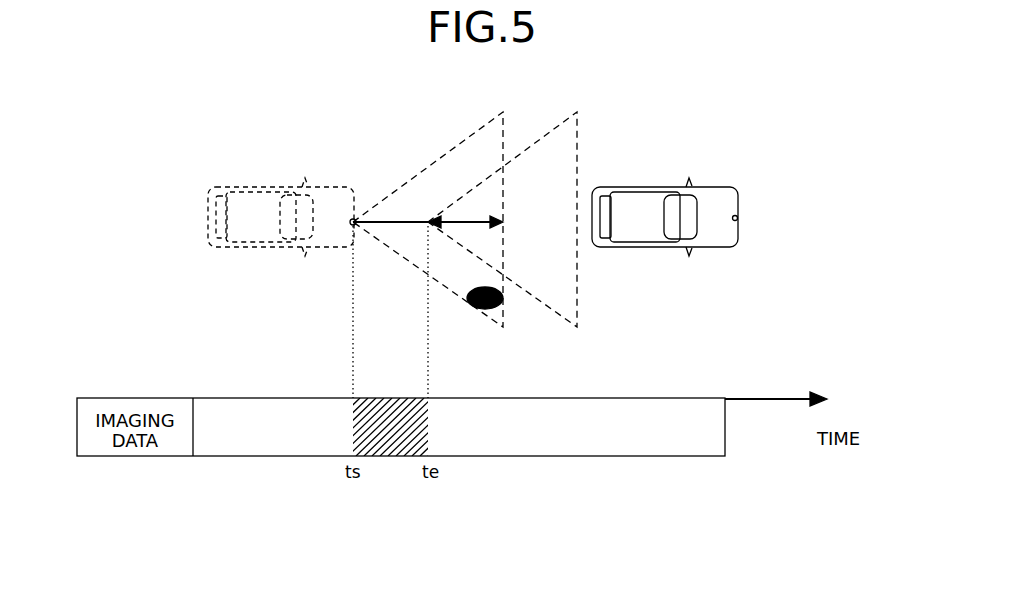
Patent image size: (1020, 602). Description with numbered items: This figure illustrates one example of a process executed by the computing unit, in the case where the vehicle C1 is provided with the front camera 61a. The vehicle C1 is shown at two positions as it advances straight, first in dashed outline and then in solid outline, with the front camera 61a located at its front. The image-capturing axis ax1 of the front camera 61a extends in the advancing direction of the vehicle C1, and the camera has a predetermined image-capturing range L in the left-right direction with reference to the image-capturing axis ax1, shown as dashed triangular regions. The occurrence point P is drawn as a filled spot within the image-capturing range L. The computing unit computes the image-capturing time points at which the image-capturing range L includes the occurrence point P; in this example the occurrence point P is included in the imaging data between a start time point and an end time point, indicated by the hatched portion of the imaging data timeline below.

The vehicle C1 is at (280, 187).
The front camera 61a is at (353, 217).
The image-capturing axis ax1 is at (418, 221).
The image-capturing range L is at (486, 135).
The occurrence point P is at (480, 309).